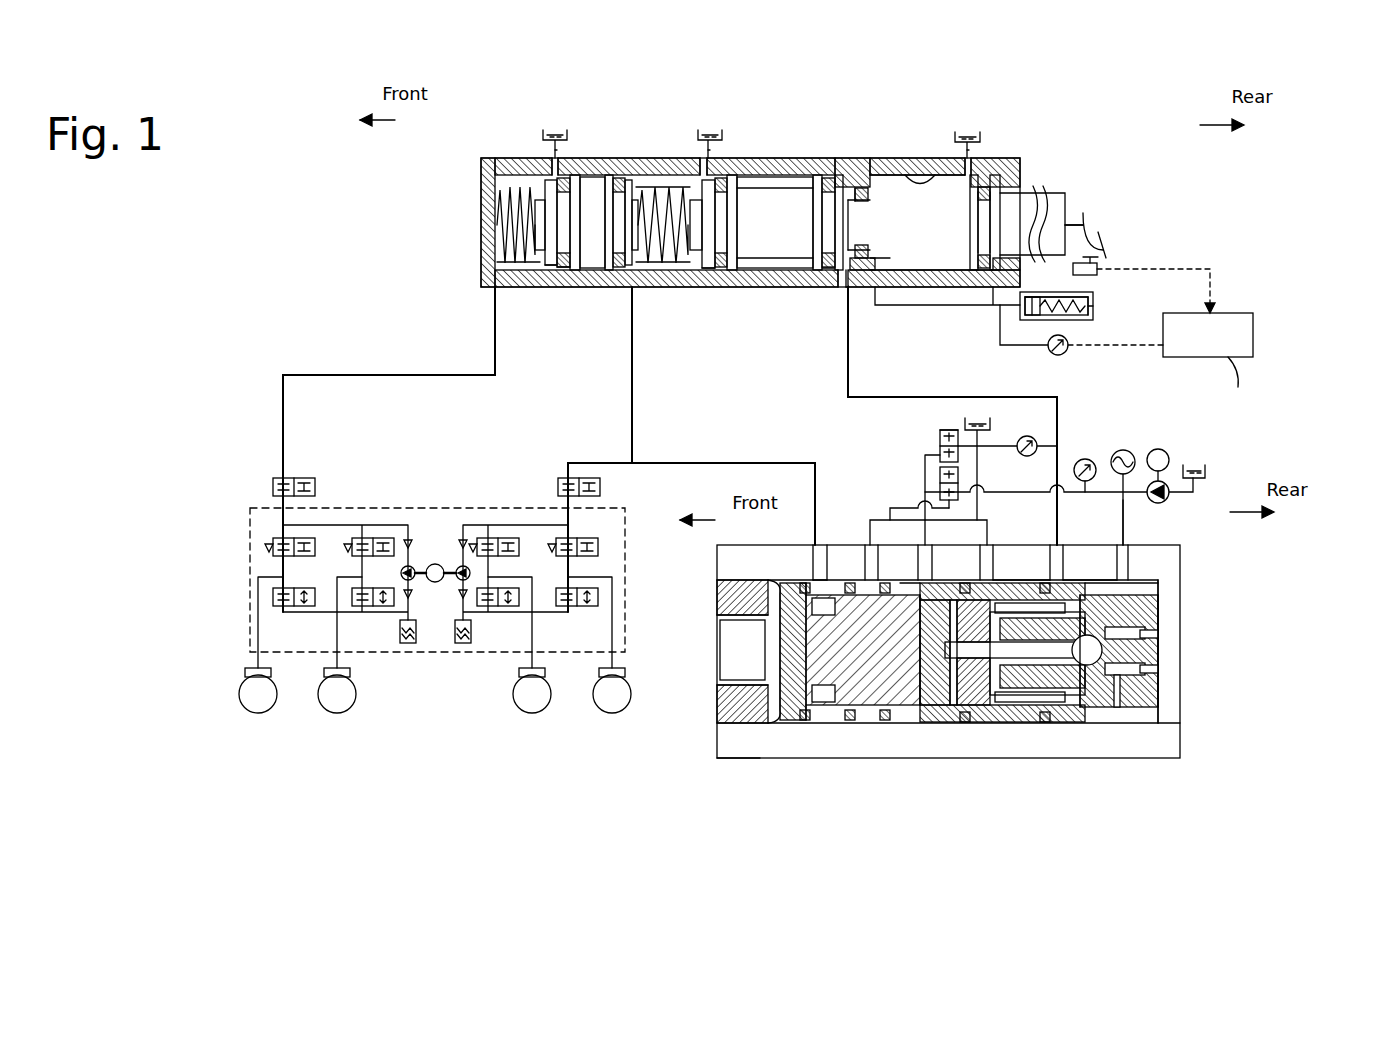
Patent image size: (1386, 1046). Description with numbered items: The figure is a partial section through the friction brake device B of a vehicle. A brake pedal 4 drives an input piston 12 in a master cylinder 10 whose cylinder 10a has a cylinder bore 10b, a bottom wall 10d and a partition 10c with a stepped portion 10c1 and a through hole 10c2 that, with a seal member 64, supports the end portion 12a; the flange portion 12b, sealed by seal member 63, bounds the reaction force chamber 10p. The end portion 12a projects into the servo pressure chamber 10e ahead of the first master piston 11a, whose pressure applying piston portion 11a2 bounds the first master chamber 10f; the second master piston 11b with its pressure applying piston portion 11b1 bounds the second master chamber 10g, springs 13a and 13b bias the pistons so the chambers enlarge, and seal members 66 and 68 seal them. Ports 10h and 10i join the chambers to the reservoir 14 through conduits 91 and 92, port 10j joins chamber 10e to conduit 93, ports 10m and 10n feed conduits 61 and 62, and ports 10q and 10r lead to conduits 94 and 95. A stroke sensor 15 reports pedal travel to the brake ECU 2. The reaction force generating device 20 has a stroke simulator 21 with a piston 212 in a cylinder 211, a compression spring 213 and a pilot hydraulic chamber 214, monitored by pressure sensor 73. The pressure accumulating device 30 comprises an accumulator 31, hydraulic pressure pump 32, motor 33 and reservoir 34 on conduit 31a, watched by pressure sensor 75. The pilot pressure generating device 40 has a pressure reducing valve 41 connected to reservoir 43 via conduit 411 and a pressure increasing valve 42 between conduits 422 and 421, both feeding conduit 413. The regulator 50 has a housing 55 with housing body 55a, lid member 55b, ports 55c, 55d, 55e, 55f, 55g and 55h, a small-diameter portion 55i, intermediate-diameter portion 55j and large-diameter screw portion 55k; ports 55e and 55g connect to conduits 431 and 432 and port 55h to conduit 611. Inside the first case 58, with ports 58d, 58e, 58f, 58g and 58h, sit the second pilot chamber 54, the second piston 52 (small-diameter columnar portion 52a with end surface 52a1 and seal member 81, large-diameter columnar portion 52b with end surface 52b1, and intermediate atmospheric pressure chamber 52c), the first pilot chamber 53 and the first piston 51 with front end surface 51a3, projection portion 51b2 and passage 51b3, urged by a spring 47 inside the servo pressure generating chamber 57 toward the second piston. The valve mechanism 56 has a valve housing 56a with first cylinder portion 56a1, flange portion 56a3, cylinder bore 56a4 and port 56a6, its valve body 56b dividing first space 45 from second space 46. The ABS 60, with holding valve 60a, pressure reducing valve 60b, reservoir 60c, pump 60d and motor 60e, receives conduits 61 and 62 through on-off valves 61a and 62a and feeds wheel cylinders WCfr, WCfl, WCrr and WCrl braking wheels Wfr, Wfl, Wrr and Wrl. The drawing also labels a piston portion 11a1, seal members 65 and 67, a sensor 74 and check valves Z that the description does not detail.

The brake ECU 2 is at (1230, 313).
The brake pedal 4 is at (1105, 245).
The master cylinder 10 is at (785, 238).
The cylinder 10a is at (765, 166).
The cylinder bore 10b is at (530, 170).
The partition 10c is at (875, 170).
The stepped portion 10c1 is at (840, 180).
The through hole 10c2 is at (862, 252).
The bottom wall 10d is at (481, 215).
The servo pressure chamber 10e is at (830, 272).
The first master chamber 10f is at (668, 275).
The second master chamber 10g is at (522, 262).
The port 10h is at (705, 158).
The port 10i is at (553, 158).
The port 10j is at (858, 290).
The port 10m is at (640, 275).
The port 10n is at (490, 275).
The reaction force chamber 10p is at (905, 295).
The port 10q is at (887, 295).
The port 10r is at (966, 158).
The first master piston 11a is at (772, 227).
The first piston seal portion 11a1 is at (790, 180).
The pressure applying piston portion 11a2 is at (720, 275).
The second master piston 11b is at (622, 236).
The pressure applying piston portion 11b1 is at (553, 275).
The input piston 12 is at (898, 215).
The end portion 12a is at (848, 290).
The flange portion 12b is at (1000, 195).
The spring 13a is at (672, 210).
The spring 13b is at (510, 195).
The reservoir 14 is at (568, 133).
The stroke sensor 15 is at (1098, 270).
The reaction force generating device 20 is at (1056, 319).
The stroke simulator 21 is at (1050, 292).
The pressure accumulating device 30 is at (1150, 463).
The accumulator 31 is at (1125, 450).
The conduit 31a is at (1120, 516).
The hydraulic pressure pump 32 is at (1168, 500).
The motor 33 is at (1160, 449).
The reservoir 34 is at (1205, 465).
The pilot pressure generating device 40 is at (1028, 463).
The pressure reducing valve 41 is at (940, 440).
The pressure increasing valve 42 is at (940, 475).
The reservoir 43 is at (988, 420).
The first space 45 is at (1140, 585).
The second space 46 is at (1160, 592).
The spring 47 is at (1158, 634).
The regulator 50 is at (1205, 586).
The first piston 51 is at (1014, 702).
The front end surface 51a3 is at (950, 722).
The projection portion 51b2 is at (1010, 722).
The passage 51b3 is at (1045, 722).
The second piston 52 is at (888, 702).
The small-diameter columnar portion 52a is at (832, 718).
The end surface 52a1 is at (765, 627).
The large-diameter columnar portion 52b is at (898, 720).
The end surface 52b1 is at (930, 722).
The intermediate atmospheric pressure chamber 52c is at (855, 725).
The first pilot chamber 53 is at (740, 652).
The second pilot chamber 54 is at (800, 722).
The housing 55 is at (970, 609).
The housing body 55a is at (763, 752).
The lid member 55b is at (717, 706).
The port 55c is at (1122, 556).
The port 55d is at (1060, 550).
The port 55e is at (1000, 547).
The port 55f is at (956, 533).
The port 55g is at (897, 533).
The port 55h is at (825, 550).
The small-diameter portion 55i is at (1172, 752).
The intermediate-diameter portion 55j is at (1013, 578).
The large-diameter screw portion 55k is at (718, 573).
The valve mechanism 56 is at (1176, 658).
The valve housing 56a is at (1157, 700).
The first cylinder portion 56a1 is at (1150, 680).
The flange portion 56a3 is at (1100, 722).
The cylinder bore 56a4 is at (1150, 665).
The port 56a6 is at (1118, 708).
The valve body 56b is at (1105, 650).
The servo pressure generating chamber 57 is at (1080, 722).
The first case 58 is at (748, 738).
The port 58d is at (1058, 578).
The port 58e is at (980, 579).
The port 58f is at (918, 577).
The port 58g is at (866, 577).
The port 58h is at (813, 577).
The ABS 60 is at (434, 561).
The holding valve 60a is at (300, 538).
The pressure reducing valve 60b is at (300, 588).
The reservoir 60c is at (417, 625).
The pump 60d is at (415, 570).
The motor 60e is at (437, 563).
The conduit 61 is at (633, 386).
The on-off valve 61a is at (602, 487).
The conduit 62 is at (355, 375).
The on-off valve 62a is at (308, 480).
The seal member 63 is at (982, 270).
The seal member 64 is at (860, 188).
The seal 65 is at (800, 273).
The seal member 66 is at (700, 270).
The seal 67 is at (590, 268).
The seal member 68 is at (562, 272).
The pressure sensor 73 is at (1062, 355).
The sensor 74 is at (1030, 436).
The pressure sensor 75 is at (1085, 459).
The seal member 81 is at (848, 722).
The conduit 91 is at (712, 152).
The conduit 92 is at (558, 150).
The conduit 93 is at (855, 400).
The conduit 94 is at (936, 300).
The conduit 95 is at (972, 150).
The cylinder 211 is at (1068, 322).
The piston 212 is at (1032, 316).
The compression spring 213 is at (1085, 312).
The pilot hydraulic chamber 214 is at (1028, 322).
The conduit 411 is at (949, 430).
The conduit 413 is at (925, 483).
The conduit 421 is at (949, 505).
The conduit 422 is at (1015, 491).
The conduit 431 is at (1007, 445).
The conduit 432 is at (890, 518).
The conduit 611 is at (715, 463).
The friction brake device B is at (1114, 189).
The check valve Z is at (265, 548).
The wheel cylinder WCfr is at (264, 676).
The wheel cylinder WCfl is at (343, 676).
The wheel cylinder WCrr is at (538, 676).
The wheel cylinder WCrl is at (618, 676).
The front right wheel Wfr is at (265, 708).
The front left wheel Wfl is at (343, 708).
The rear right wheel Wrr is at (538, 708).
The rear left wheel Wrl is at (618, 708).